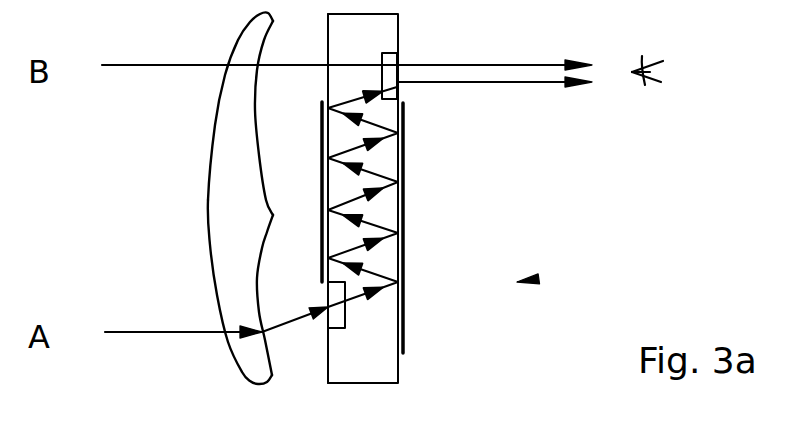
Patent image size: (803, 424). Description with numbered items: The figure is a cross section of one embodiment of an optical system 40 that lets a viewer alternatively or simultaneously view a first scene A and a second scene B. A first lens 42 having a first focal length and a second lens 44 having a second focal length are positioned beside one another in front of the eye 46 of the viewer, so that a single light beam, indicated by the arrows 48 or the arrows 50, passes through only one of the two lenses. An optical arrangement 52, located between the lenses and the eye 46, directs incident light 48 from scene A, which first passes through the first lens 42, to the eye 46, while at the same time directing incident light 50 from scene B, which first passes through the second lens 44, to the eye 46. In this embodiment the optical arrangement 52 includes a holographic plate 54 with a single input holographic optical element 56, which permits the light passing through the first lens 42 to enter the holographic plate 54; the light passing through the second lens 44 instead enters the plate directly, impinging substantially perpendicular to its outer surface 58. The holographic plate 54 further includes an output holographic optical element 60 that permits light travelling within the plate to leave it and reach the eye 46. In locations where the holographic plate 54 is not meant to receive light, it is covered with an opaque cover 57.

The optical system 40 is at (538, 279).
The first lens 42 is at (258, 362).
The second lens 44 is at (248, 48).
The eye of the viewer 46 is at (658, 85).
The arrows indicating incident light from first scene 48 is at (134, 335).
The arrows indicating incident light from second scene 50 is at (124, 67).
The optical arrangement 52 is at (428, 214).
The holographic plate 54 is at (387, 359).
The input holographic optical element 56 is at (338, 318).
The opaque cover 57 is at (322, 133).
The outer surface 58 is at (327, 81).
The output holographic optical element 60 is at (393, 58).